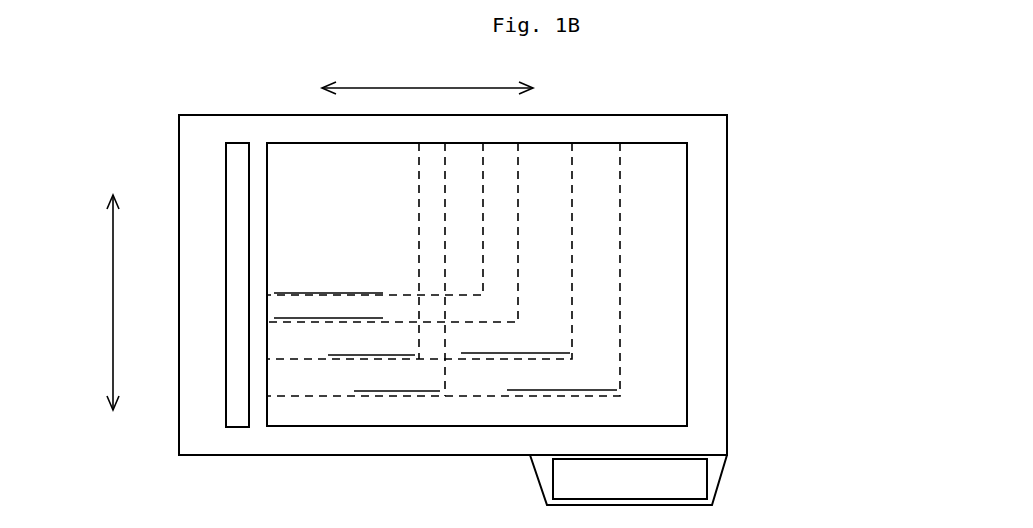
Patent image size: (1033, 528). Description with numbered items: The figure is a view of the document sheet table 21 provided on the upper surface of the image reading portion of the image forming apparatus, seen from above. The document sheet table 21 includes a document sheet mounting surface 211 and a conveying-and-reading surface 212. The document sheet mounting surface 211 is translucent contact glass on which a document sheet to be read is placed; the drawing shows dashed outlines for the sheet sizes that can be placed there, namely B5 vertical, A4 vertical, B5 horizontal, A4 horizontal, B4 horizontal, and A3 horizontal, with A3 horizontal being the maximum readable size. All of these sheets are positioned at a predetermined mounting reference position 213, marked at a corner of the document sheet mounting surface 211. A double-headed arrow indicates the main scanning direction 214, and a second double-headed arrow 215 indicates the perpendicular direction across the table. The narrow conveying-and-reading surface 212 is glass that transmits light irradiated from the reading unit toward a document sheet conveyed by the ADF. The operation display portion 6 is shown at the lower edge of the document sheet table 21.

The document sheet table 21 is at (393, 455).
The document sheet mounting surface 211 is at (322, 427).
The conveying-and-reading surface 212 is at (238, 428).
The mounting reference position 213 is at (272, 152).
The main scanning direction 214 is at (113, 300).
The horizontal direction 215 is at (422, 87).
The operation display portion 6 is at (707, 478).